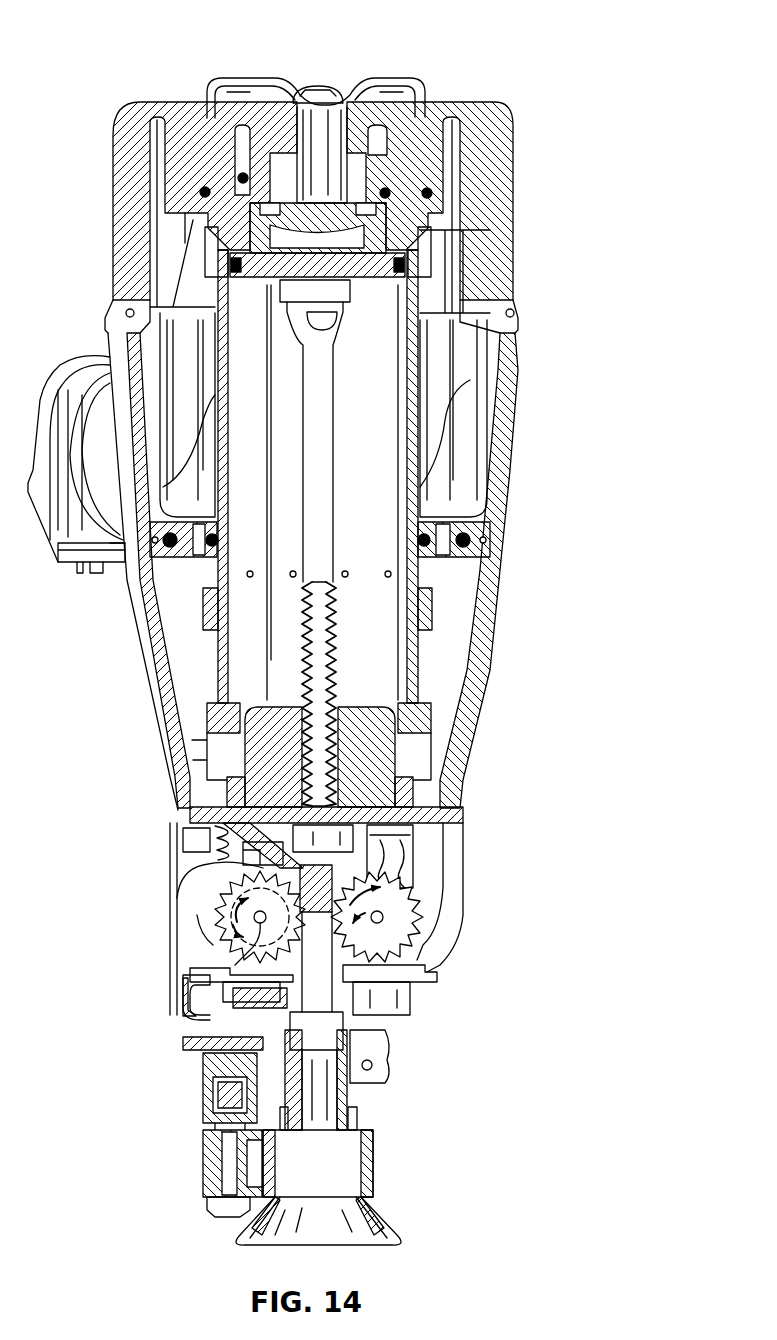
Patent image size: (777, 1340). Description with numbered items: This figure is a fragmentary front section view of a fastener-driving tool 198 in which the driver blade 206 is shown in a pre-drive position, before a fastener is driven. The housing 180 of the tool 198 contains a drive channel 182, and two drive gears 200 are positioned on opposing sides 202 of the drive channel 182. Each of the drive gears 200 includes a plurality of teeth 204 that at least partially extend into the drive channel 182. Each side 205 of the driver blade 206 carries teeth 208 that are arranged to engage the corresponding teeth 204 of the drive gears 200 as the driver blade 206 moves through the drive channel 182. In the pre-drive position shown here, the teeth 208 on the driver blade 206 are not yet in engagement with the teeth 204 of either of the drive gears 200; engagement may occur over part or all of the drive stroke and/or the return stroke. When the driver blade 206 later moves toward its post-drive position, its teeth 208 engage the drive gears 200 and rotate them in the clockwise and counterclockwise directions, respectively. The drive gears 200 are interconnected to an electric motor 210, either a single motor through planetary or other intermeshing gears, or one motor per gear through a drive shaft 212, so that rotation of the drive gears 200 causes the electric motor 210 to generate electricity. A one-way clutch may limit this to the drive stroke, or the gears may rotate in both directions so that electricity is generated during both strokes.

The tool 198 is at (497, 42).
The housing 180 is at (500, 245).
The driver blade 206 is at (312, 455).
The side of driver blade 205 is at (105, 598).
The teeth 208 is at (118, 645).
The drive gears 200 is at (198, 913).
The electric motor 210 is at (233, 884).
The teeth 204 is at (232, 905).
The drive shaft 212 is at (245, 950).
The opposing sides of the drive channel 202 is at (240, 972).
The drive channel 182 is at (335, 992).